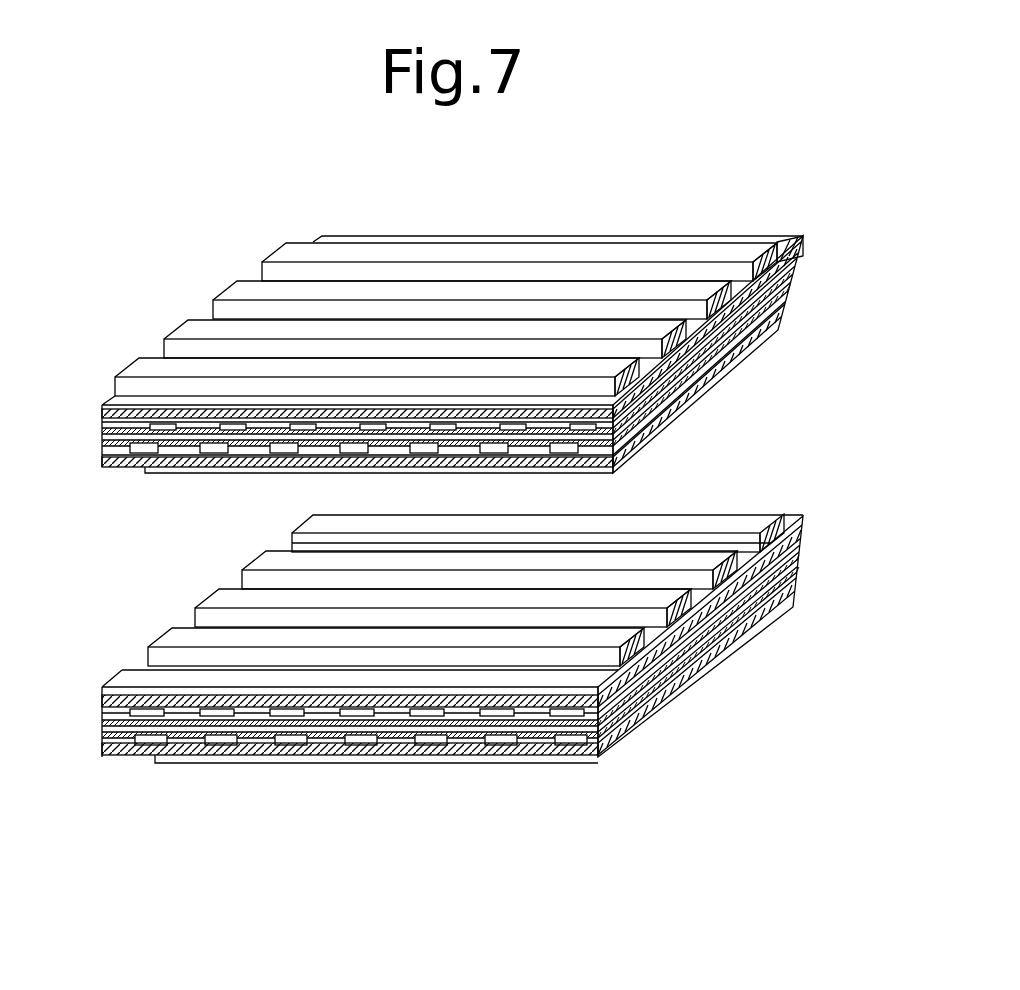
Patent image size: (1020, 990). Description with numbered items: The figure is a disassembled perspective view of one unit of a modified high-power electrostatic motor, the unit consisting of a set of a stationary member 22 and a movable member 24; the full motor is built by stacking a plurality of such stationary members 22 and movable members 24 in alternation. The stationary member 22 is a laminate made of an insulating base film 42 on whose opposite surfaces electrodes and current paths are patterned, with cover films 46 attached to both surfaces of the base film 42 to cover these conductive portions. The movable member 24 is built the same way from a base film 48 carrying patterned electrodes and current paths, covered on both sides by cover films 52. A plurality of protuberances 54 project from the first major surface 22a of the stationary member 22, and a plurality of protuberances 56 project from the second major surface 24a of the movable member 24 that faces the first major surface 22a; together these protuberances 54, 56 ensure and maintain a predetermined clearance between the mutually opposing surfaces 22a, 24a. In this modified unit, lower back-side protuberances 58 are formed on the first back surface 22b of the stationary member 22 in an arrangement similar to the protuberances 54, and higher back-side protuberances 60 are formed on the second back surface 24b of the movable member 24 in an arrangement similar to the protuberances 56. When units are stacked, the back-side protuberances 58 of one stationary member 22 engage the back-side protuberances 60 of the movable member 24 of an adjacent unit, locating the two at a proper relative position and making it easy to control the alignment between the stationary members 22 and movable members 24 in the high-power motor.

The stationary member 22 is at (138, 603).
The first major surface 22a is at (148, 665).
The first back surface 22b is at (150, 763).
The movable member 24 is at (150, 312).
The second major surface 24a is at (127, 470).
The second back surface 24b is at (105, 407).
The base film 42 is at (807, 553).
The cover films 46 is at (805, 519).
The base film 48 is at (808, 262).
The cover films 52 is at (808, 238).
The protuberances 54 is at (216, 601).
The protuberances 56 is at (770, 353).
The lower back-side protuberances 58 is at (793, 605).
The higher back-side protuberances 60 is at (603, 362).